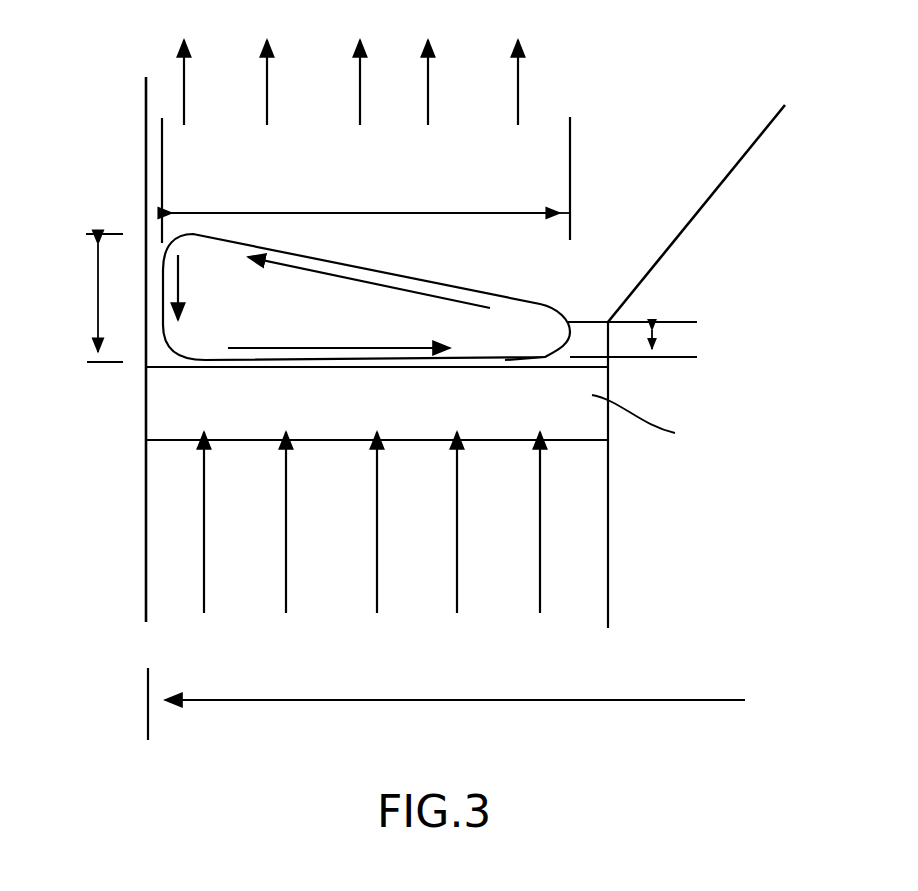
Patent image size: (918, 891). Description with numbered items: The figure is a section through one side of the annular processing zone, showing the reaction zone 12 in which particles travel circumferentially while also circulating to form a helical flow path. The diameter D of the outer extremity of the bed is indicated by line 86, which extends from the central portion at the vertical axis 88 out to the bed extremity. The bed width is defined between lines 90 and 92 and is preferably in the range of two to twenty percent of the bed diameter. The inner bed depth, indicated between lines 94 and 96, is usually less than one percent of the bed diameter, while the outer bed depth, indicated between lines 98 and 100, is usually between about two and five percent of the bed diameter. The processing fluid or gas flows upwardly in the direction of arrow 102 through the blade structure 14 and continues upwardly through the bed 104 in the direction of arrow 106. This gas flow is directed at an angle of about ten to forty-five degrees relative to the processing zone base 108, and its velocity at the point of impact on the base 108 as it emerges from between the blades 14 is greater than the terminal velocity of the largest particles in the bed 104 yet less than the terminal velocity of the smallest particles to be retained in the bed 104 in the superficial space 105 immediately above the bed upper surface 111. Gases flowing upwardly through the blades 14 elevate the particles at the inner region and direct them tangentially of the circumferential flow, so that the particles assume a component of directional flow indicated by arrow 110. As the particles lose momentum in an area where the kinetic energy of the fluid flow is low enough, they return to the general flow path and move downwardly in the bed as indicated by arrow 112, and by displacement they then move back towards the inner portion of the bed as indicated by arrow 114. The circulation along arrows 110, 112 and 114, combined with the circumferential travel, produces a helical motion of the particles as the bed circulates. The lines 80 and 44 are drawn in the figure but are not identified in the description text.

The reaction zone 12 is at (602, 222).
The blade structure 14 is at (572, 415).
The shroud surface 44 is at (752, 155).
The outer wall 80 is at (148, 138).
The bed diameter line 86 is at (670, 699).
The vertical axis 88 is at (148, 727).
The bed width line 90 is at (570, 163).
The bed width line 92 is at (162, 166).
The inner bed depth line 94 is at (683, 320).
The inner bed depth line 96 is at (677, 357).
The outer bed depth line 98 is at (108, 234).
The outer bed depth line 100 is at (93, 363).
The gas flow arrow 102 is at (287, 554).
The bed 104 is at (385, 252).
The superficial space 105 is at (447, 253).
The upward flow arrow 106 is at (519, 97).
The processing zone base 108 is at (513, 363).
The particle flow arrow 110 is at (333, 273).
The bed upper surface 111 is at (247, 242).
The particle flow arrow 112 is at (178, 290).
The particle flow arrow 114 is at (368, 350).